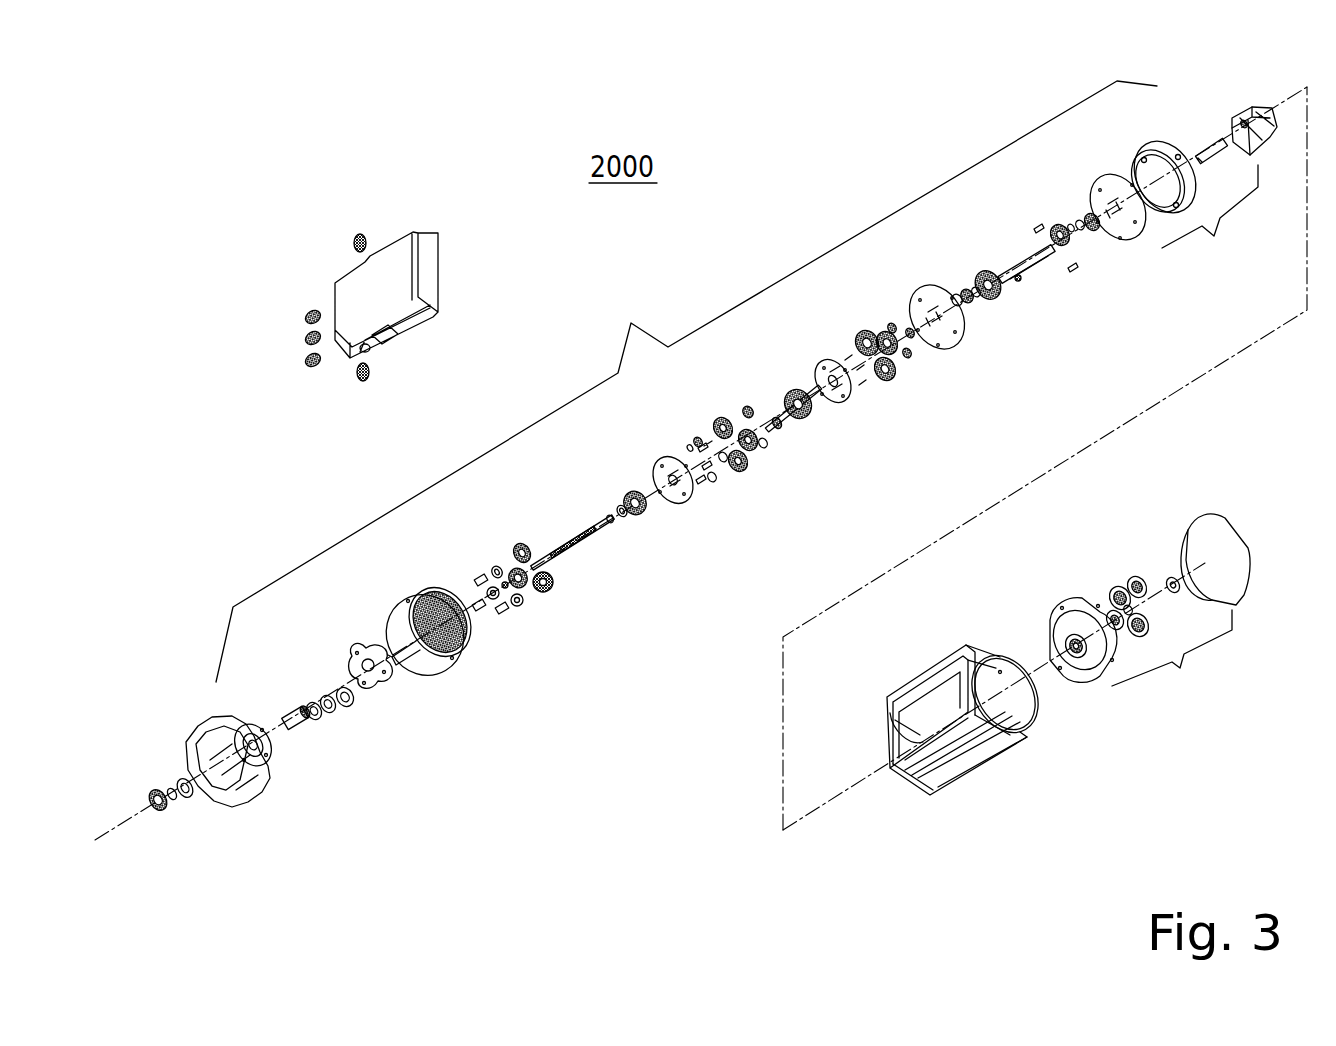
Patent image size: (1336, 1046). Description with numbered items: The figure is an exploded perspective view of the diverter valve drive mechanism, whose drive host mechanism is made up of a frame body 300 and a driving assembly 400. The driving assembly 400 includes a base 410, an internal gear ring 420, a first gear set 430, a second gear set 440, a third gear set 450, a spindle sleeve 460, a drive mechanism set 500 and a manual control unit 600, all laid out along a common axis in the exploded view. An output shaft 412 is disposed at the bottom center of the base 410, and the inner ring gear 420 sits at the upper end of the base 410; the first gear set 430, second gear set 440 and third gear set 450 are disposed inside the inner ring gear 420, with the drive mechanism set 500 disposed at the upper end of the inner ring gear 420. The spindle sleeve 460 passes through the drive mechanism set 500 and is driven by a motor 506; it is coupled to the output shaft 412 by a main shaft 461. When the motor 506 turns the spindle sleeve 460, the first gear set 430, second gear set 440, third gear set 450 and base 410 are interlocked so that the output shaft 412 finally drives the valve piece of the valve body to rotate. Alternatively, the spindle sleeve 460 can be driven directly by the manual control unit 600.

The frame body 300 is at (977, 760).
The driving assembly 400 is at (686, 381).
The base 410 is at (247, 803).
The output shaft 412 is at (297, 727).
The internal gear ring 420 is at (452, 670).
The first gear set 430 is at (533, 598).
The second gear set 440 is at (748, 465).
The third gear set 450 is at (893, 382).
The spindle sleeve 460 is at (1028, 265).
The main shaft 461 is at (580, 540).
The drive mechanism set 500 is at (1168, 204).
The motor 506 is at (1263, 108).
The manual control unit 600 is at (1146, 609).